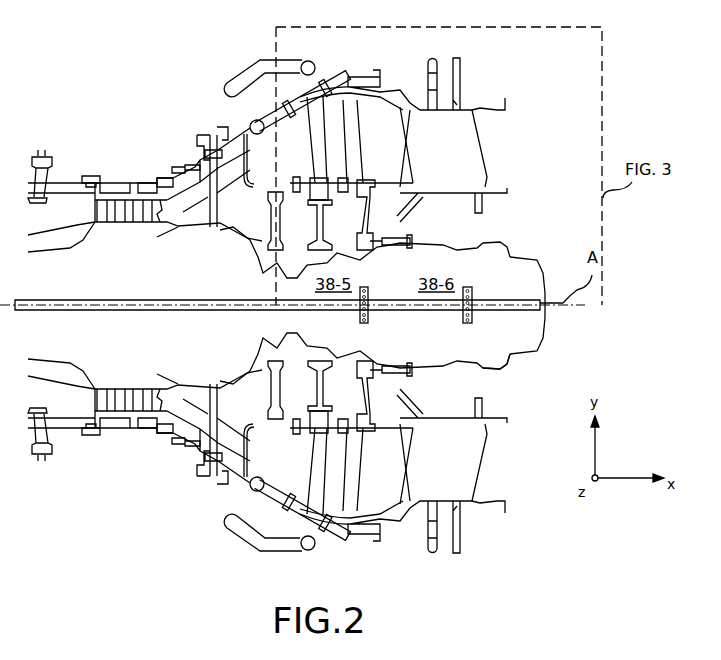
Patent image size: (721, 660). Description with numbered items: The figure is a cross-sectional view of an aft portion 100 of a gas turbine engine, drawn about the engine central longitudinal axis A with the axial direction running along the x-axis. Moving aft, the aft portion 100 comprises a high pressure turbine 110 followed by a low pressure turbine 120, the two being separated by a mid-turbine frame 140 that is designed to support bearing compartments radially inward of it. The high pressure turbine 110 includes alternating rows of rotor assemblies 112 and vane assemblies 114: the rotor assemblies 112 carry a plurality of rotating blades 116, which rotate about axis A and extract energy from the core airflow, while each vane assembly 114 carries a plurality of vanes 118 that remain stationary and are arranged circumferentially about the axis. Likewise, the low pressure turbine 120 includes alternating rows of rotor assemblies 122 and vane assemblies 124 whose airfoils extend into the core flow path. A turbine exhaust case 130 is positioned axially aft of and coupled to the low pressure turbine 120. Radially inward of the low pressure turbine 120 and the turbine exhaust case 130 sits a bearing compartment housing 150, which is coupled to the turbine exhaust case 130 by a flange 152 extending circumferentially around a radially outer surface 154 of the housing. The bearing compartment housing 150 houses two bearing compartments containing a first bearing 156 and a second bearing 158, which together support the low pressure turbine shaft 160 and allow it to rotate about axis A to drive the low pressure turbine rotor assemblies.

The aft portion 100 is at (98, 66).
The high pressure turbine 110 is at (103, 178).
The rotor assemblies 112 is at (137, 203).
The vane assemblies 114 is at (160, 203).
The blades 116 is at (137, 223).
The vanes 118 is at (158, 225).
The low pressure turbine 120 is at (310, 93).
The rotor assemblies 122 is at (368, 103).
The vane assemblies 124 is at (338, 100).
The turbine exhaust case 130 is at (478, 107).
The mid-turbine frame 140 is at (203, 130).
The bearing compartment housing 150 is at (483, 250).
The flange 152 is at (413, 241).
The radially outer surface 154 is at (493, 358).
The first bearing 156 is at (370, 315).
The second bearing 158 is at (473, 317).
The low pressure turbine shaft 160 is at (500, 300).